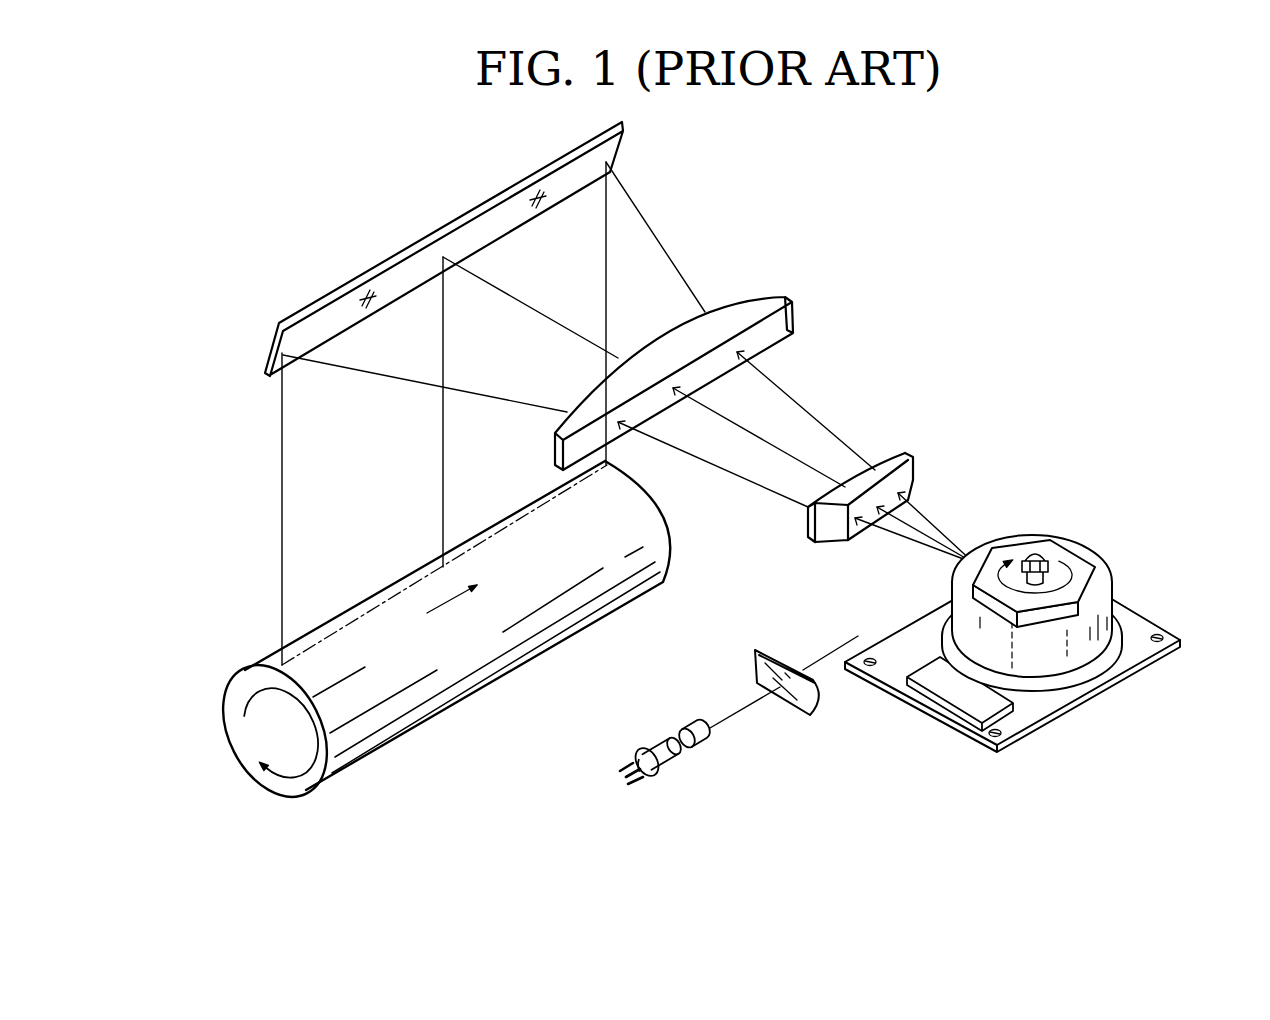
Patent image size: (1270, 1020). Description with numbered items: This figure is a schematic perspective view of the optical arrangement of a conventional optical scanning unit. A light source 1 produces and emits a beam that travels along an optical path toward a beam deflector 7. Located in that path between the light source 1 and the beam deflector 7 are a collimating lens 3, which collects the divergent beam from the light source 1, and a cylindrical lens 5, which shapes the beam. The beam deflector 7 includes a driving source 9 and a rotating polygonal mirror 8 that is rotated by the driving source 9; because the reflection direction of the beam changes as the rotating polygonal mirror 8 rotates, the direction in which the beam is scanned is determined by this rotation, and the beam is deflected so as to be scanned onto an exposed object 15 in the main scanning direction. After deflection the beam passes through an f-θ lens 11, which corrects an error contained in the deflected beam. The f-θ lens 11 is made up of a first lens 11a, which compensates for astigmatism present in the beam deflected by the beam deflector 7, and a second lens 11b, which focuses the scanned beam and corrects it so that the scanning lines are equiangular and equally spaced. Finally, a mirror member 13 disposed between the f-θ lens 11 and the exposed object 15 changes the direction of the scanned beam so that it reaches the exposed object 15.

The light source 1 is at (657, 745).
The collimating lens 3 is at (695, 722).
The cylindrical lens 5 is at (780, 655).
The beam deflector 7 is at (1068, 533).
The rotating polygonal mirror 8 is at (1058, 615).
The driving source 9 is at (1110, 622).
The f-θ lens 11 is at (907, 308).
The first lens 11a is at (906, 452).
The second lens 11b is at (802, 306).
The mirror member 13 is at (618, 157).
The exposed object 15 is at (368, 597).